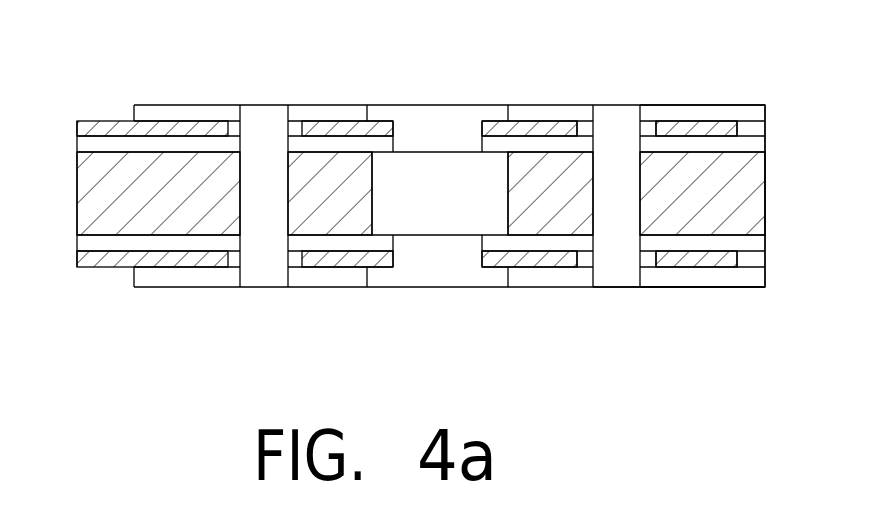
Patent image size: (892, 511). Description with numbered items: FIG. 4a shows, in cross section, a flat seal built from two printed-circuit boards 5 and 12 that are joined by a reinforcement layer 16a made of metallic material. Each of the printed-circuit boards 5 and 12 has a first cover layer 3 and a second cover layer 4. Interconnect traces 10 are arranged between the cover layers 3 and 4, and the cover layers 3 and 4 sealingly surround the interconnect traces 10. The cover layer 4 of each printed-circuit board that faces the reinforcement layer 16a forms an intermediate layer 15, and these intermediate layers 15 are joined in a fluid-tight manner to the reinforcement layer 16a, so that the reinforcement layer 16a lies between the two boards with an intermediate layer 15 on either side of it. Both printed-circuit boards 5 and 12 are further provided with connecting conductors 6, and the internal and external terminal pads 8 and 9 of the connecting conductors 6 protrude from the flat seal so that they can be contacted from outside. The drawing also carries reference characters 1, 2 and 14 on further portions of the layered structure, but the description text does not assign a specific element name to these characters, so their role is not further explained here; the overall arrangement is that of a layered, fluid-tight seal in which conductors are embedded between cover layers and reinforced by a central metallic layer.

The frame 1 is at (540, 110).
The core member 2 is at (492, 158).
The first cover layer 3 is at (193, 112).
The second cover layer 4 is at (88, 146).
The printed-circuit board 5 is at (706, 70).
The connecting conductor 6 is at (321, 126).
The internal terminal pad 8 is at (378, 126).
The external terminal pad 9 is at (102, 128).
The interconnect trace 10 is at (715, 128).
The printed-circuit board 12 is at (652, 327).
The block 14 is at (618, 115).
The intermediate layer 15 is at (745, 145).
The reinforcement layer 16a is at (747, 195).